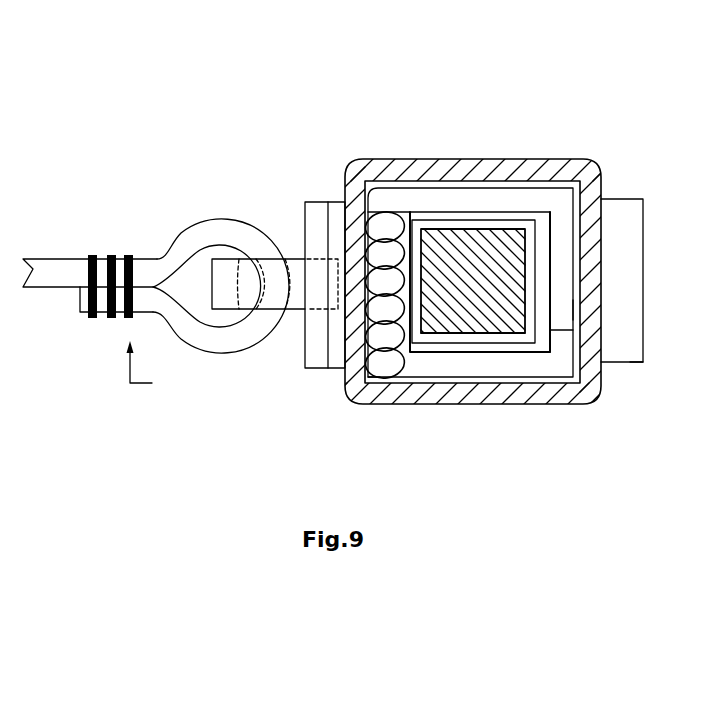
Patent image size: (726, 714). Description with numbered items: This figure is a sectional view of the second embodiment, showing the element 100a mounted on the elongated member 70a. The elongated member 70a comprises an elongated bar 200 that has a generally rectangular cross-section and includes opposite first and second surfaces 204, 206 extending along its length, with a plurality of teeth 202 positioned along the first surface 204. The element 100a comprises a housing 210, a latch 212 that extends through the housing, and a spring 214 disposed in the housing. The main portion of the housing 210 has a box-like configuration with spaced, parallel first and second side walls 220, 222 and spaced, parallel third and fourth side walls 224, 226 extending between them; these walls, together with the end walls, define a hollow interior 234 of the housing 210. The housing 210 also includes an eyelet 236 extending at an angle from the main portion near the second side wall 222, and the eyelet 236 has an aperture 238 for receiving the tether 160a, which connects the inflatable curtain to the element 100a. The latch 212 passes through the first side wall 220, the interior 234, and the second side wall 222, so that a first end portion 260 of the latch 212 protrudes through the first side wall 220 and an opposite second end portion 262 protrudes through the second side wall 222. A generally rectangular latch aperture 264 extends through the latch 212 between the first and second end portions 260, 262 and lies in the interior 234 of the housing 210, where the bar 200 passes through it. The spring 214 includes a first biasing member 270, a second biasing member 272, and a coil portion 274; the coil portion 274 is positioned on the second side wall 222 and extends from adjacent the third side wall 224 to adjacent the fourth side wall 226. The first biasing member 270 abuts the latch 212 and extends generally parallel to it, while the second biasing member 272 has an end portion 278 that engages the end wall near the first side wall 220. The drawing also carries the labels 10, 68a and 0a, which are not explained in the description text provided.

The fuel injector assembly 10 is at (124, 362).
The tether 160a is at (60, 273).
The eyelet 236 is at (228, 280).
The aperture 238 is at (320, 278).
The second end portion 262 is at (335, 325).
The second side wall 222 is at (358, 350).
The third side wall 224 is at (395, 173).
The fourth side wall 226 is at (437, 402).
The first side wall 220 is at (579, 232).
The housing 210 is at (542, 167).
The spring 214 is at (468, 198).
The second biasing member 272 is at (445, 197).
The elongated bar 200 is at (460, 318).
The latch aperture 264 is at (502, 227).
The first surface 204 is at (526, 266).
The teeth 202 is at (527, 276).
The elongated member 70a is at (483, 320).
The second surface 206 is at (388, 310).
The coil portion 274 is at (366, 377).
The end portion 278 is at (557, 312).
The first biasing member 270 is at (530, 367).
The first end portion 260 is at (643, 299).
The latch 212 is at (644, 348).
The hollow interior 234 is at (577, 308).
The sensor assembly 68a is at (611, 124).
The element 100a is at (632, 452).
The partial numeral (cut off) 0a is at (13, 470).